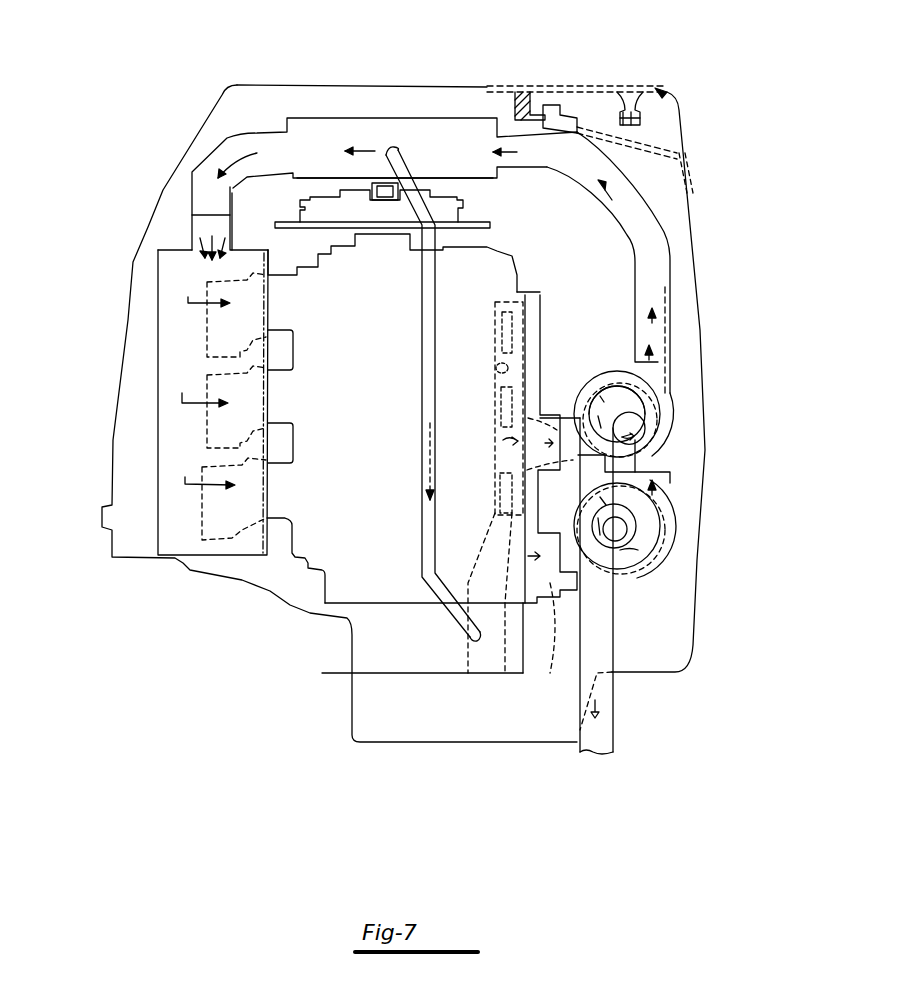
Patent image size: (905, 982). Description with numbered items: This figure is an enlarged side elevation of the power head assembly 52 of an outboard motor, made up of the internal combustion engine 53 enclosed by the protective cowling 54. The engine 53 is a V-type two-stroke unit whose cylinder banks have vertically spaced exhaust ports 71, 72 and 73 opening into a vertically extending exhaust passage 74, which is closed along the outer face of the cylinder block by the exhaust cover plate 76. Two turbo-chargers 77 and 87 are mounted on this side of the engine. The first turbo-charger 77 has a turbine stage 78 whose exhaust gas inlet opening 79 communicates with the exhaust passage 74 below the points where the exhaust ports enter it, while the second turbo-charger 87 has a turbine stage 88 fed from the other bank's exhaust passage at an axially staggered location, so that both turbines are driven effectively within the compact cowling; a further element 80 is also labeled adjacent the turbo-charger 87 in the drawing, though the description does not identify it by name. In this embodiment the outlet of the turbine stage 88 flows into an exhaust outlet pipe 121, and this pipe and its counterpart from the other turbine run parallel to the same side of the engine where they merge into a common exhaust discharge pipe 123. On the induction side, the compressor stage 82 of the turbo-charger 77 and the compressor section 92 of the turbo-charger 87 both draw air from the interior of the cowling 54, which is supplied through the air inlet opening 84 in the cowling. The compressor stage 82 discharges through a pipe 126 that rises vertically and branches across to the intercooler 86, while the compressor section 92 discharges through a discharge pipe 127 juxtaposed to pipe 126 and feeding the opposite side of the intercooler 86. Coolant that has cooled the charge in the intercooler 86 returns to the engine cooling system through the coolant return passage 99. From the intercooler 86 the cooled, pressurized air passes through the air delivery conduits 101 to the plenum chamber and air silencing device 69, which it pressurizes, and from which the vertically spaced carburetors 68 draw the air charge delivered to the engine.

The power head assembly 52 is at (213, 133).
The air delivery conduits 101 is at (258, 132).
The protective cowling 54 is at (177, 165).
The plenum chamber, air silencing device 69 is at (158, 277).
The carburetors 68 is at (207, 317).
The intercooler 86 is at (437, 112).
The air inlet opening 84 is at (667, 120).
The exhaust cover plate 76 is at (533, 307).
The discharge pipe 127 is at (635, 320).
The pipe 126 is at (670, 343).
The turbine stage 88 is at (653, 417).
The turbo-charger 87 is at (614, 364).
The compressor section 92 is at (603, 378).
The roller position 80 is at (588, 390).
The exhaust outlet pipe 121 is at (657, 450).
The turbine stage 78 is at (660, 497).
The turbo-charger 77 is at (673, 527).
The compressor stage 82 is at (637, 568).
The coolant return passage 99 is at (423, 367).
The exhaust port 71 is at (497, 320).
The exhaust passage 74 is at (495, 367).
The exhaust port 72 is at (500, 415).
The exhaust port 73 is at (500, 503).
The internal combustion engine 53 is at (342, 565).
The exhaust gas inlet opening 79 is at (550, 645).
The exhaust discharge pipe 123 is at (603, 722).